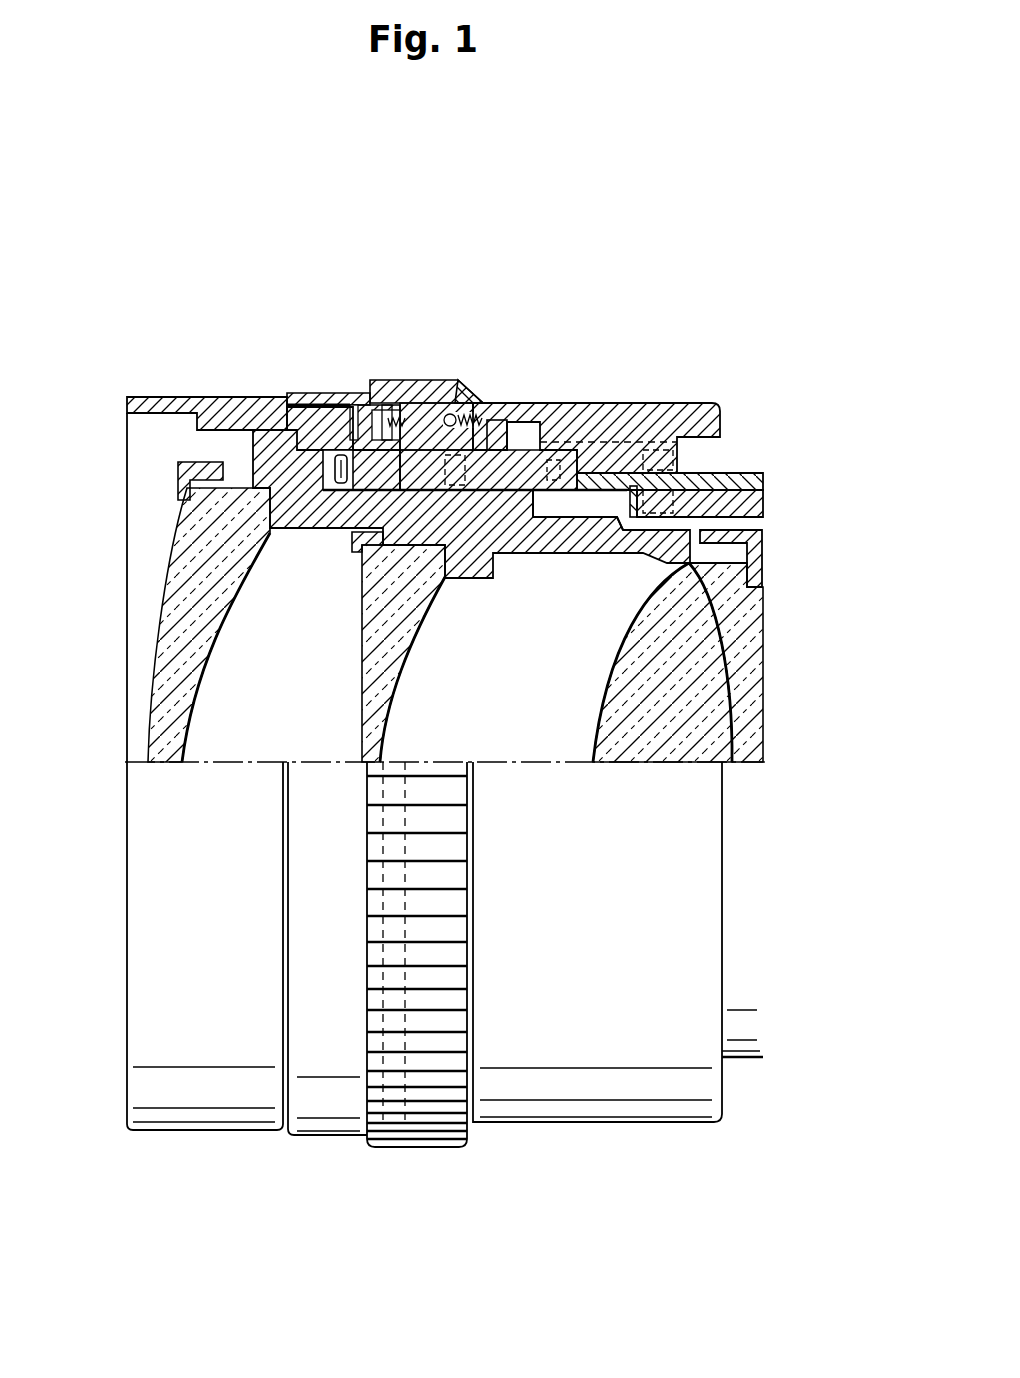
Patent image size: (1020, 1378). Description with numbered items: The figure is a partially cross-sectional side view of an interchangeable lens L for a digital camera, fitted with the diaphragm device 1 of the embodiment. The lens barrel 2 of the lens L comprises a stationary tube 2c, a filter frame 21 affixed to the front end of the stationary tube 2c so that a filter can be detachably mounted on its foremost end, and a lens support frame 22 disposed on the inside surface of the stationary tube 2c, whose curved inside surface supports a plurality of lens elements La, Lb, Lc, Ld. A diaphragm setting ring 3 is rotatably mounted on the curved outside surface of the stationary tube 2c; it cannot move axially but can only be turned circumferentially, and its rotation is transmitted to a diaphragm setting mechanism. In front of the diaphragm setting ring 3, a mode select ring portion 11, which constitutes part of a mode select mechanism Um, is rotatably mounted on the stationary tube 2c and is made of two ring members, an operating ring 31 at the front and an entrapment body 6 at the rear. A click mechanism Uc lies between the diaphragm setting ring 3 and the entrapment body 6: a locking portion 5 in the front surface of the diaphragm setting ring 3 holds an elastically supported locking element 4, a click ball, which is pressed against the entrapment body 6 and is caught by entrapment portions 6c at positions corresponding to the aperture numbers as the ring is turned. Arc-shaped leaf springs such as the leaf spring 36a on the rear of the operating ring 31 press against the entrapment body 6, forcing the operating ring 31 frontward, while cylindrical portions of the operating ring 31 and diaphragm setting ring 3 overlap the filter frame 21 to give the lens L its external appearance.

The lens L is at (654, 242).
The diaphragm device 1 is at (428, 360).
The lens barrel 2 is at (675, 1142).
The stationary tube 2c is at (745, 473).
The diaphragm setting ring 3 is at (710, 400).
The locking element 4 is at (470, 456).
The locking portion 5 is at (528, 518).
The entrapment body 6 is at (372, 550).
The entrapment portions 6c is at (458, 383).
The mode select ring portion 11 is at (297, 390).
The filter frame 21 is at (150, 397).
The lens support frame 22 is at (250, 450).
The operating ring 31 is at (345, 490).
The leaf spring 36a is at (410, 392).
The mode select mechanism Um is at (344, 380).
The click mechanism Uc is at (485, 392).
The lens element La is at (160, 580).
The lens element Lb is at (360, 708).
The lens element Lc is at (594, 726).
The lens element Ld is at (702, 766).